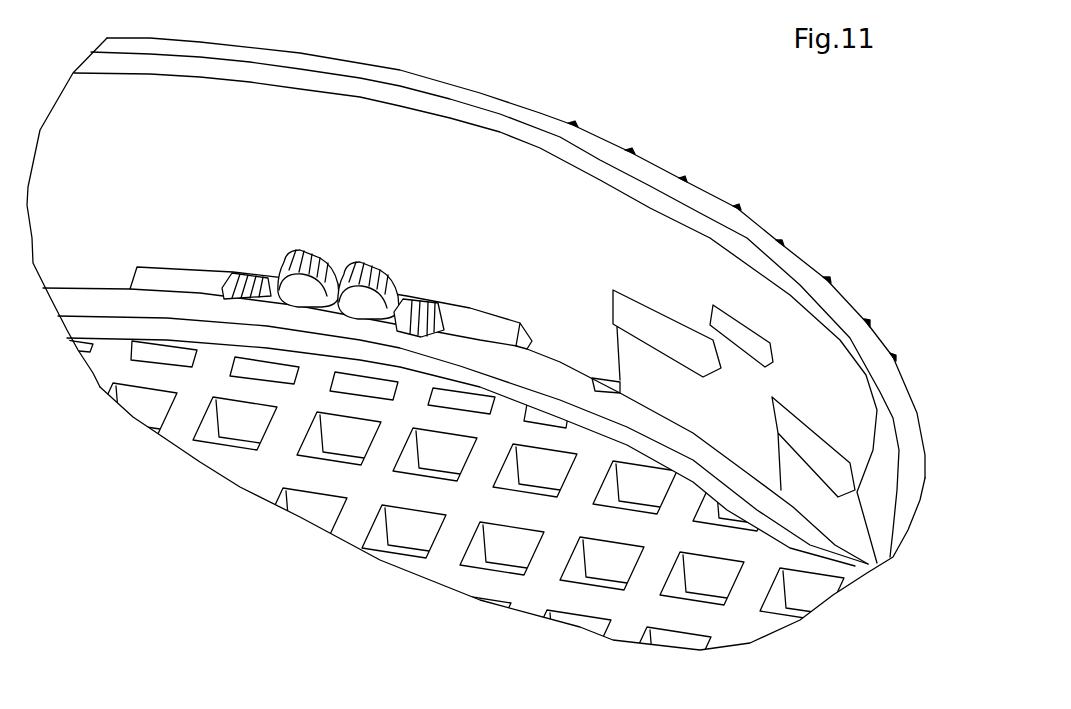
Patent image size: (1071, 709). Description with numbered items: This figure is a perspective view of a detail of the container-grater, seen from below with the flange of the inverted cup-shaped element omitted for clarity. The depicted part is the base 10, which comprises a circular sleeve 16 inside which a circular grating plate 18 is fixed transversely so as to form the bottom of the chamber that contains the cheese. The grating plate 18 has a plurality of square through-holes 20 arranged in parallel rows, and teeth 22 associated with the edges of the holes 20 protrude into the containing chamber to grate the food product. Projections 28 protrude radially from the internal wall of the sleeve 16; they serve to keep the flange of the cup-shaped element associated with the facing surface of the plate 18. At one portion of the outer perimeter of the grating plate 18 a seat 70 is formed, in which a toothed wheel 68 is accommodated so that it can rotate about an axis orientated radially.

The base 10 is at (757, 220).
The circular sleeve 16 is at (590, 231).
The grating plate 18 is at (102, 367).
The square through-holes 20 is at (233, 445).
The teeth 22 is at (457, 533).
The projections 28 is at (673, 337).
The toothed wheel 68 is at (355, 266).
The seat 70 is at (197, 292).